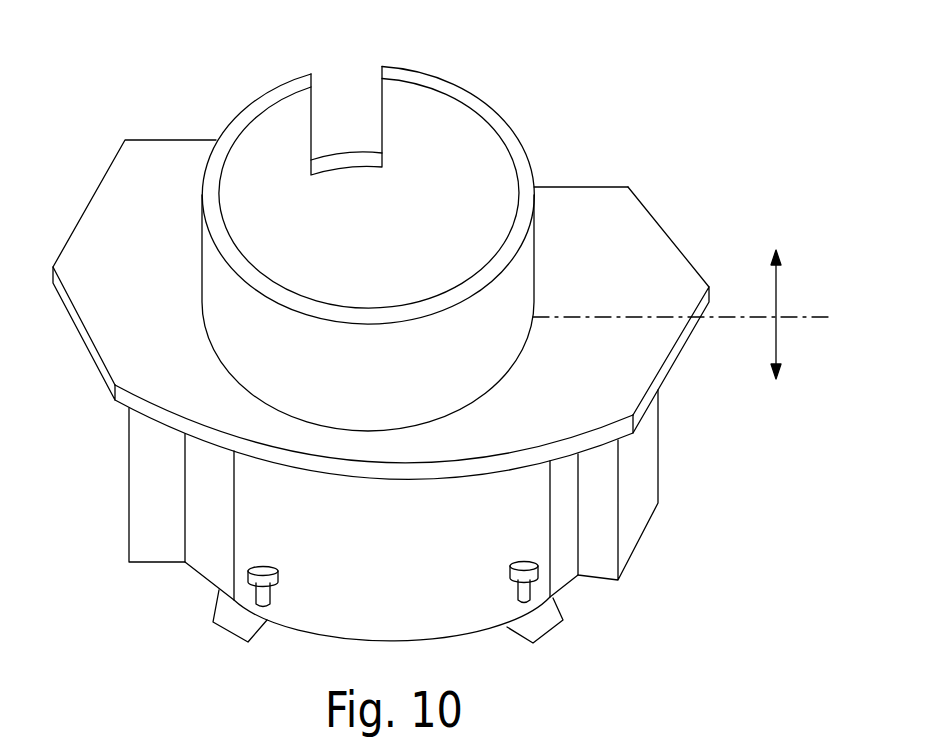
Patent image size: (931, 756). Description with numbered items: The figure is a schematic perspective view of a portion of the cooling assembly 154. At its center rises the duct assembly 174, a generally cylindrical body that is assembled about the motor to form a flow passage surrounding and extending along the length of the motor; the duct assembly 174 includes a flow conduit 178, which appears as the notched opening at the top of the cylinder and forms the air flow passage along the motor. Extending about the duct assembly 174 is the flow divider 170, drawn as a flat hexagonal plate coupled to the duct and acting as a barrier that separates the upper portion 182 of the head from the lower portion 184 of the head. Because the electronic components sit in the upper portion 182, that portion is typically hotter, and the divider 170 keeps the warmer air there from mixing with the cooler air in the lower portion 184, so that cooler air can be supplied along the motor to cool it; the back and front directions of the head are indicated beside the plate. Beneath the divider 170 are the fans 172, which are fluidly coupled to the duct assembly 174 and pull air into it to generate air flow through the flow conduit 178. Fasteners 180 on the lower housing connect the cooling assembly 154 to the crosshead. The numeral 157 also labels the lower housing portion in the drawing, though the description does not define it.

The cooling assembly 154 is at (570, 126).
The base 157 is at (587, 600).
The flow divider 170 is at (158, 248).
The fans 172 is at (150, 483).
The duct assembly 174 is at (353, 388).
The flow conduit 178 is at (441, 139).
The fasteners 180 is at (264, 566).
The upper portion 182 is at (660, 224).
The lower portion 184 is at (672, 367).